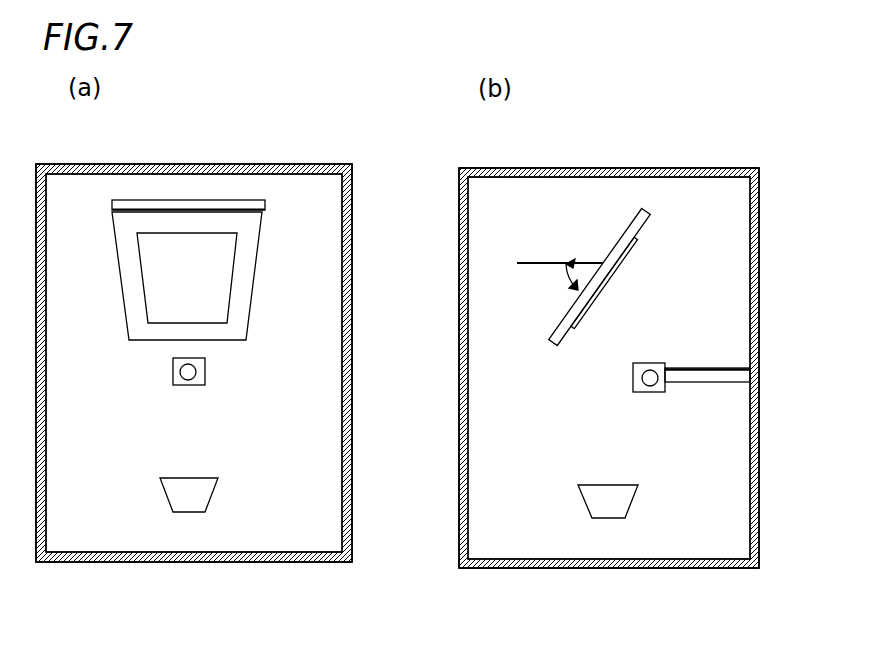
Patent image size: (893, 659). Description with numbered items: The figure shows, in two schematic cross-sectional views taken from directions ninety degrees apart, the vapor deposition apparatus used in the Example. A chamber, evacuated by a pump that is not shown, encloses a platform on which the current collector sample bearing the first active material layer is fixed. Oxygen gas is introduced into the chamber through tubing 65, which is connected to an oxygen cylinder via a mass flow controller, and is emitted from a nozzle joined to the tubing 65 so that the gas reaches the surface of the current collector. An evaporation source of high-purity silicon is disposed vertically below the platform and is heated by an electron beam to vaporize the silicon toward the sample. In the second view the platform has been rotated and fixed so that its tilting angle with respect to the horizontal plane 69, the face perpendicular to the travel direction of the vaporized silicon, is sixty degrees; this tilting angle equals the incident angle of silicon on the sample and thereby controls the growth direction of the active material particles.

The tubing 65 is at (683, 381).
The horizontal plane 69 is at (530, 262).